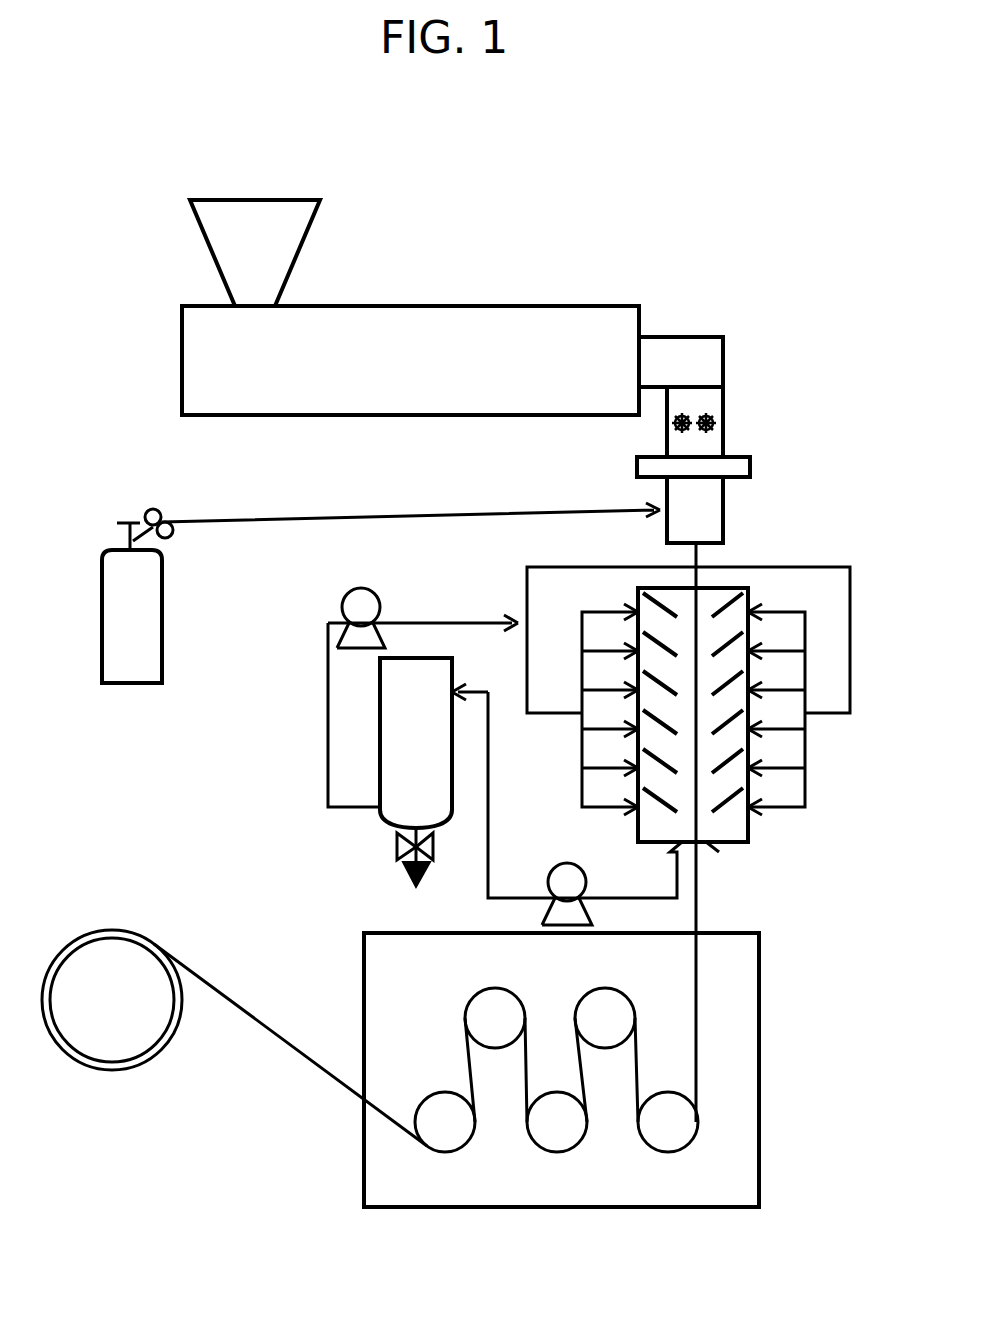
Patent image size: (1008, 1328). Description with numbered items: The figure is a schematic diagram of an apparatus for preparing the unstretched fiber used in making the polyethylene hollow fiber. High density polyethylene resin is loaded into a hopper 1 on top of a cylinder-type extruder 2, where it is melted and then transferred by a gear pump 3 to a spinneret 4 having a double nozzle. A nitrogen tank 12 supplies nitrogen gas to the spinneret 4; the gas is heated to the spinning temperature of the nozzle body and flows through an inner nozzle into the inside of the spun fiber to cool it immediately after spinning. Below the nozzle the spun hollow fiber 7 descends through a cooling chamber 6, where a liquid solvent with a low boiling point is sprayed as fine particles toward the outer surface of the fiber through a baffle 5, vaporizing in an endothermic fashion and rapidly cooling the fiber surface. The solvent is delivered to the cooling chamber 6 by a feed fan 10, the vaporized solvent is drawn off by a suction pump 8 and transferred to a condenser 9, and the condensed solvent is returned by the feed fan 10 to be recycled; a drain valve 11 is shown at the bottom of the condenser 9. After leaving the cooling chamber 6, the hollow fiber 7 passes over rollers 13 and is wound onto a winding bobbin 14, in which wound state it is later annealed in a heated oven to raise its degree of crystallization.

The hopper 1 is at (300, 268).
The extruder 2 is at (457, 307).
The gear pump 3 is at (727, 403).
The spinneret 4 is at (740, 518).
The baffle 5 is at (737, 757).
The cooling chamber 6 is at (760, 843).
The hollow fiber 7 is at (707, 908).
The suction pump 8 is at (553, 866).
The condenser 9 is at (368, 748).
The feed fan 10 is at (423, 617).
The drain valve 11 is at (390, 843).
The nitrogen tank 12 is at (172, 610).
The roller 13 is at (722, 1125).
The winding bobbin 14 is at (146, 1080).